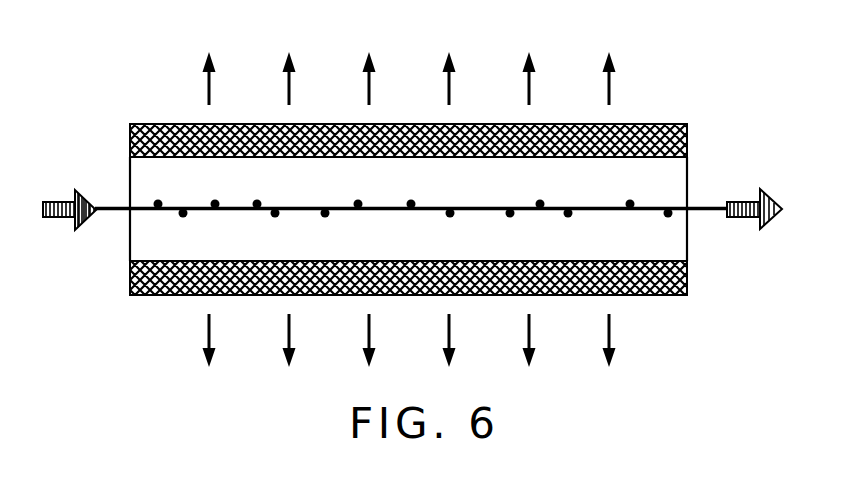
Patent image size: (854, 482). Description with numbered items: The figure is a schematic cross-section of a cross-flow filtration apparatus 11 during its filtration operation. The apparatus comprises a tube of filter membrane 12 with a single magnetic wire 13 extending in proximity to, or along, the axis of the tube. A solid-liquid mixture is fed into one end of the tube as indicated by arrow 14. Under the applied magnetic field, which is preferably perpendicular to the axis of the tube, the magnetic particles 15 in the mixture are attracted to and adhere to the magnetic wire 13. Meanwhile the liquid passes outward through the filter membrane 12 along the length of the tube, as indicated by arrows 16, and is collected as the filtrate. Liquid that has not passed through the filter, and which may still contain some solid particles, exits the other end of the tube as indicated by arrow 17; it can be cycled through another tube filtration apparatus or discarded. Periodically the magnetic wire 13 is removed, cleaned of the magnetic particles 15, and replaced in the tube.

The cross-flow filtration apparatus 11 is at (161, 295).
The tube of filter membrane 12 is at (161, 124).
The magnetic wire 13 is at (650, 208).
The arrow 14 is at (72, 200).
The magnetic particles 15 is at (181, 215).
The arrows 16 is at (291, 88).
The arrow 17 is at (745, 198).